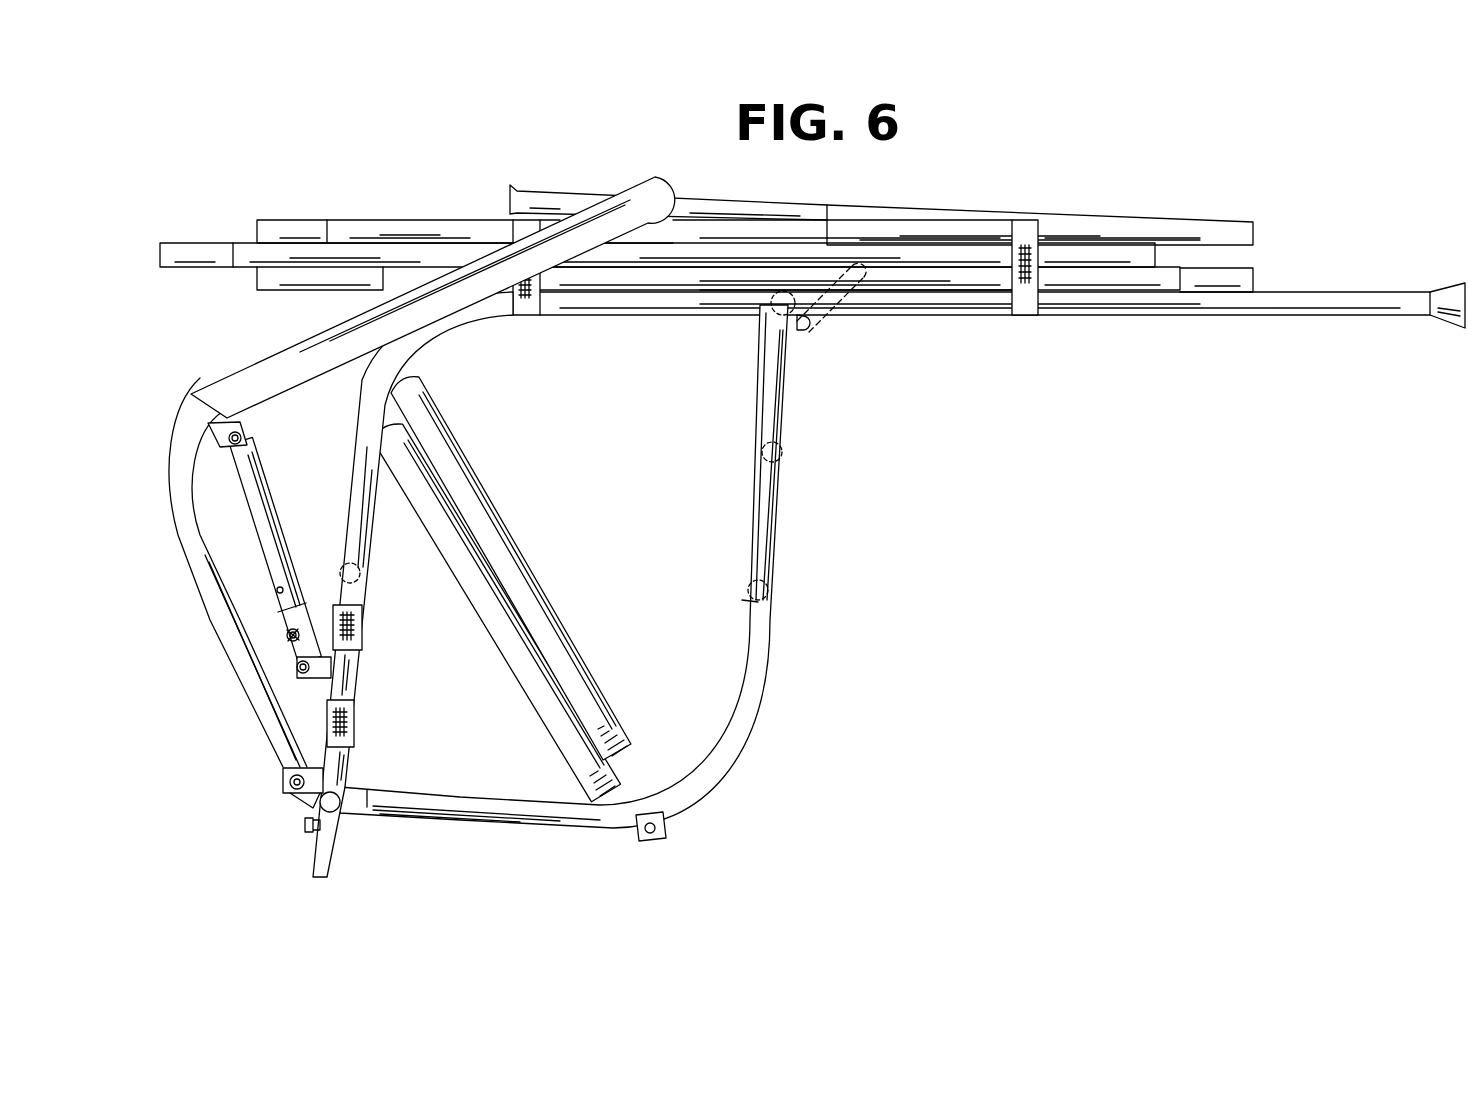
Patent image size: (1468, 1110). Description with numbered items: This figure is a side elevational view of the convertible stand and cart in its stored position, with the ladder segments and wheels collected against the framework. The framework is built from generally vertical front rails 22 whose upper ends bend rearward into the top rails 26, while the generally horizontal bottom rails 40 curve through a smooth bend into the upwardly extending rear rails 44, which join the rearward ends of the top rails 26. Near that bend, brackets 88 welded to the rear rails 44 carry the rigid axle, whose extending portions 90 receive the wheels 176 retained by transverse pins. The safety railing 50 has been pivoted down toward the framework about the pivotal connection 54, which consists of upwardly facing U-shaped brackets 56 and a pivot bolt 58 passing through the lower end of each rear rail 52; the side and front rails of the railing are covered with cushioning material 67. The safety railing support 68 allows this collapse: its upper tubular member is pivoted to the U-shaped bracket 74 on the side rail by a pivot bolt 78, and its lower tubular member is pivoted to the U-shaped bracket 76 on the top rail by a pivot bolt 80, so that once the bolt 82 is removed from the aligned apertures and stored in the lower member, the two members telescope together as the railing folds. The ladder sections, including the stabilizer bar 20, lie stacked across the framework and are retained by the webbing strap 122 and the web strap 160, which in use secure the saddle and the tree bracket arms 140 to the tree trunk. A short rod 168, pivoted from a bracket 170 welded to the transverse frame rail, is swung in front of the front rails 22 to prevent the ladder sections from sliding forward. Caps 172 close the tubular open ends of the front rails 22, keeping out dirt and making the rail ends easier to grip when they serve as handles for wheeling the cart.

The stabilizer bar 20 is at (848, 196).
The front rails 22 is at (700, 310).
The top rails 26 is at (362, 525).
The bottom rails 40 is at (766, 535).
The rear rails 44 is at (476, 792).
The safety railing 50 is at (190, 565).
The rear legs or rails 52 is at (232, 628).
The pivotal connection 54 is at (262, 791).
The U-shaped brackets 56 is at (313, 787).
The pivot bolt 58 is at (290, 777).
The cushioning material 67 is at (260, 354).
The safety railing support 68 is at (282, 522).
The U-shaped bracket 74 is at (212, 440).
The U-shaped bracket 76 is at (325, 668).
The pivot bolt 78 is at (243, 433).
The pivot bolt 80 is at (296, 672).
The bolt 82 is at (290, 638).
The brackets 88 is at (665, 830).
The extending portions of the axle 90 is at (653, 845).
The webbing strap 122 is at (1027, 316).
The tree bracket arms 140 is at (336, 850).
The web strap 160 is at (525, 316).
The short rod 168 is at (838, 318).
The bracket 170 is at (801, 332).
The caps 172 is at (1447, 322).
The wheels 176 is at (500, 618).